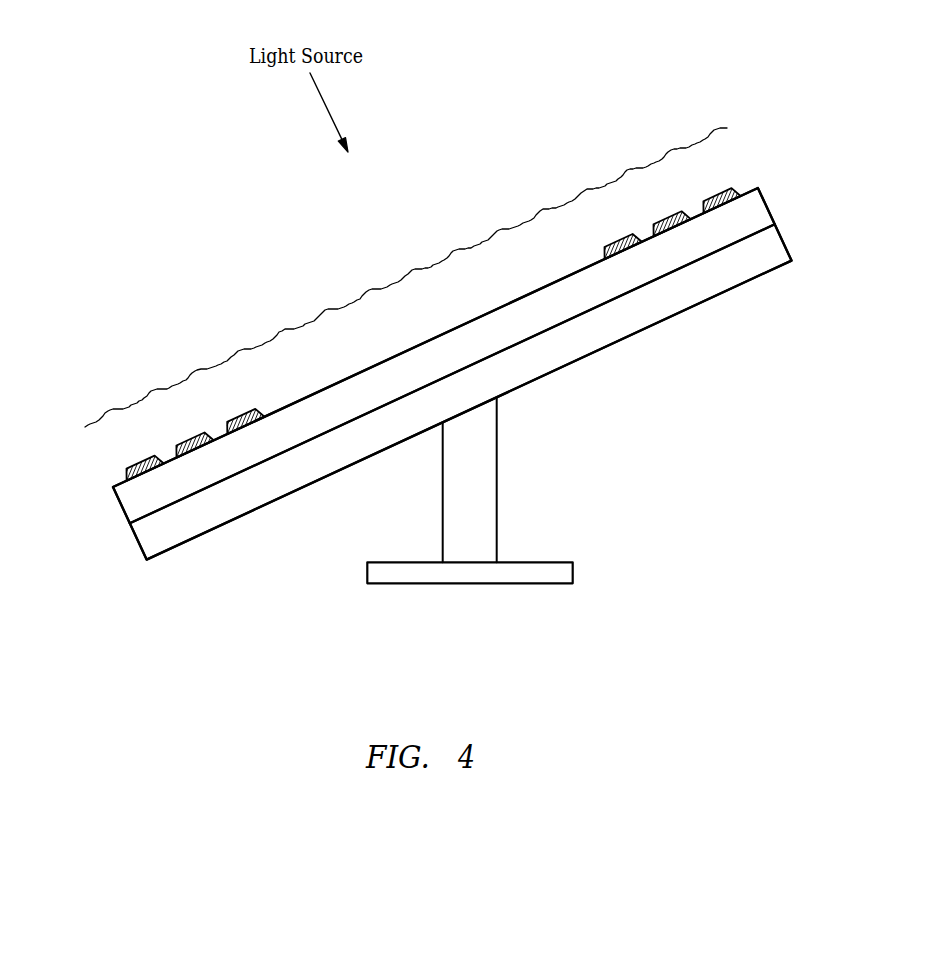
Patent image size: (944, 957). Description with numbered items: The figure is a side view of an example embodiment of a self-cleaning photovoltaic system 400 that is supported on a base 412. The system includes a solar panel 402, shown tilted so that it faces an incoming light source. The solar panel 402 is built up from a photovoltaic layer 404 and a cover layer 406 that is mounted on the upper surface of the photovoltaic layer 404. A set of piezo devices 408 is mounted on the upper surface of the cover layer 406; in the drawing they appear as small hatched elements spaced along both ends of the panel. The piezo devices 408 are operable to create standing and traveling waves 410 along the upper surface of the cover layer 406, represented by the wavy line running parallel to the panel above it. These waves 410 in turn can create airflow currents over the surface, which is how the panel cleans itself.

The self-cleaning photovoltaic system 400 is at (175, 266).
The solar panel 402 is at (778, 176).
The photovoltaic layer 404 is at (647, 307).
The cover layer 406 is at (572, 302).
The piezo devices 408 is at (127, 472).
The standing and traveling waves 410 is at (620, 174).
The base 412 is at (477, 505).